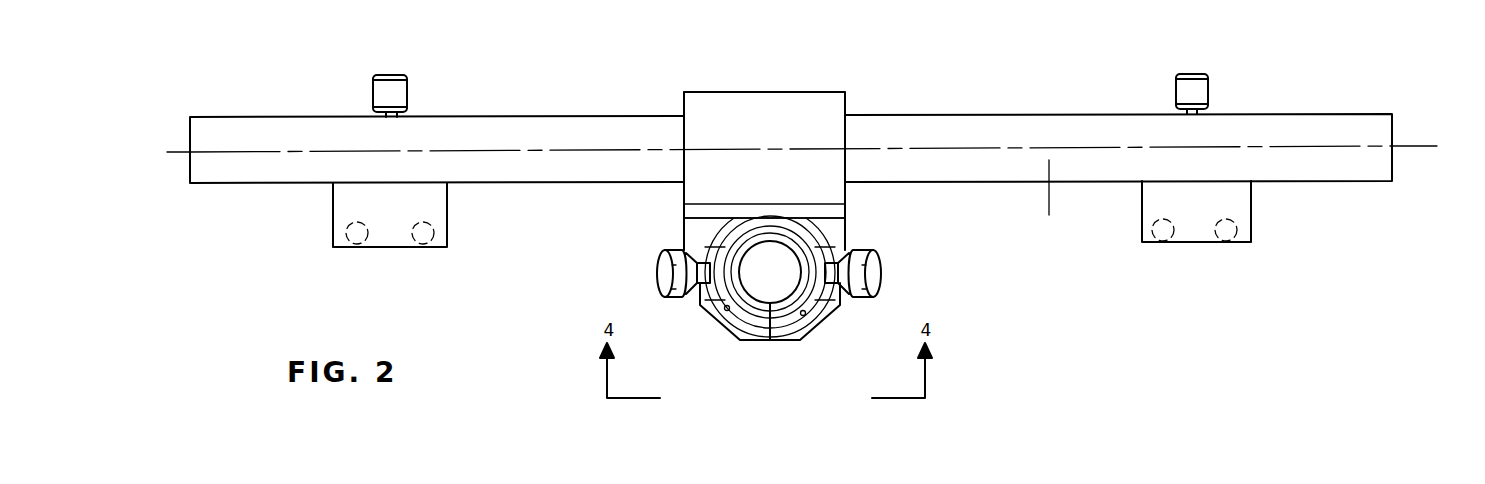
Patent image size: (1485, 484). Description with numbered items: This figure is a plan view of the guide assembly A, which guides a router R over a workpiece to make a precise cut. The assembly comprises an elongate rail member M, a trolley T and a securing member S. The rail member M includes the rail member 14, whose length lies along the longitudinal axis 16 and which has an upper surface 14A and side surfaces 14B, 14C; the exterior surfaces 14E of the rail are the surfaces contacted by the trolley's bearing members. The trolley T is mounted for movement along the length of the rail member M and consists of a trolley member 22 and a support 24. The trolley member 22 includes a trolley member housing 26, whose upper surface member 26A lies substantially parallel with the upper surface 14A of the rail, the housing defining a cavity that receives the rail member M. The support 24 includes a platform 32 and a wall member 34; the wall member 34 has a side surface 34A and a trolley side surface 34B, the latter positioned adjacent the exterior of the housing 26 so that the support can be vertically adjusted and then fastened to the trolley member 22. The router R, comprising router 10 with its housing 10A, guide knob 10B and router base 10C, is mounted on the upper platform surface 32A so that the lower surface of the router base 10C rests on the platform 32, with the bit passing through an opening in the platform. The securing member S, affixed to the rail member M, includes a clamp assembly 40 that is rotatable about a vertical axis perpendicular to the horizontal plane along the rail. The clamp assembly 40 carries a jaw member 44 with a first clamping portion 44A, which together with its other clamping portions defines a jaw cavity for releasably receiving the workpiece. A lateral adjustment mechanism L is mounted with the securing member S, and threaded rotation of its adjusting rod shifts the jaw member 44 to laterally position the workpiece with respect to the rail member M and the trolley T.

The router 10 is at (742, 318).
The housing 10A is at (772, 341).
The guide knob 10B is at (874, 263).
The router base 10C is at (813, 307).
The rail member 14 is at (1093, 112).
The upper surface 14A is at (1053, 200).
The side surface 14B is at (1020, 183).
The side surface 14C is at (1042, 114).
The exterior surfaces 14E is at (508, 117).
The longitudinal axis 16 is at (800, 149).
The trolley member 22 is at (715, 112).
The support 24 is at (704, 237).
The trolley member housing 26 is at (823, 110).
The upper surface member 26A is at (756, 100).
The platform 32 is at (838, 237).
The upper platform surface 32A is at (840, 222).
The wall member 34 is at (700, 212).
The side surface 34A is at (702, 220).
The trolley side surface 34B is at (698, 204).
The clamp assembly 40 is at (427, 250).
The jaw member 44 is at (347, 250).
The first clamping portion 44A is at (435, 213).
The guide assembly A is at (635, 82).
The lateral adjustment mechanism L is at (400, 75).
The rail member M is at (1351, 110).
The router R is at (708, 308).
The securing member S is at (332, 218).
The trolley T is at (808, 90).